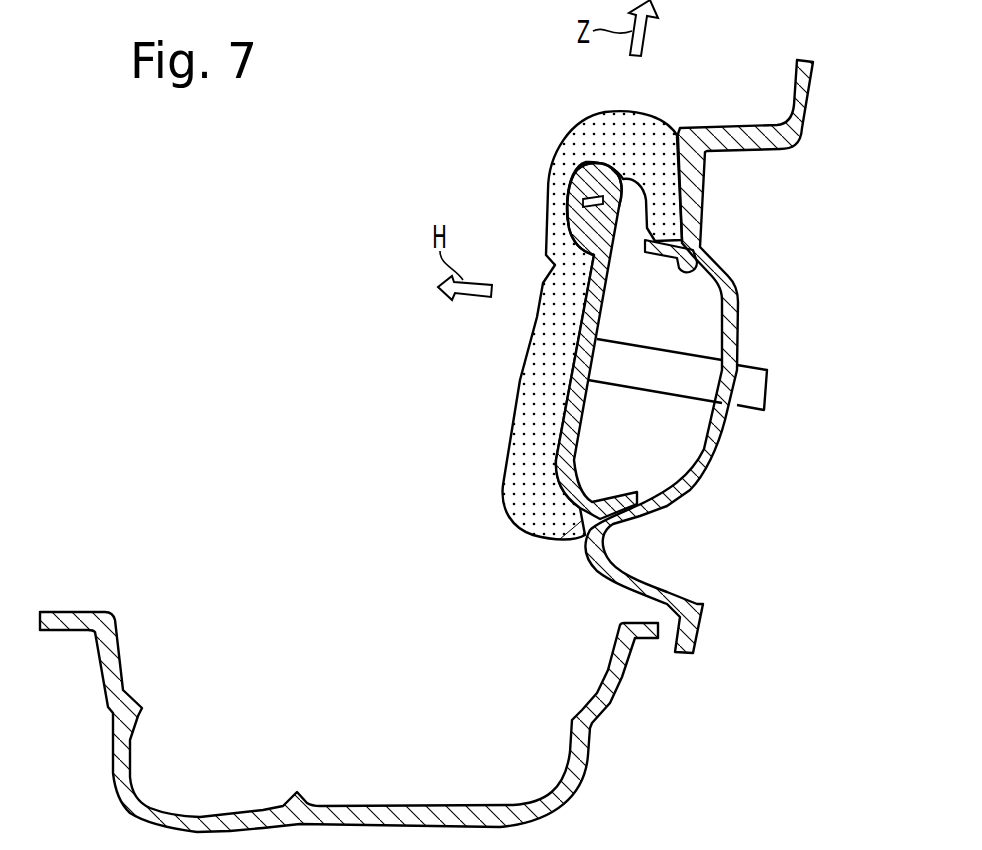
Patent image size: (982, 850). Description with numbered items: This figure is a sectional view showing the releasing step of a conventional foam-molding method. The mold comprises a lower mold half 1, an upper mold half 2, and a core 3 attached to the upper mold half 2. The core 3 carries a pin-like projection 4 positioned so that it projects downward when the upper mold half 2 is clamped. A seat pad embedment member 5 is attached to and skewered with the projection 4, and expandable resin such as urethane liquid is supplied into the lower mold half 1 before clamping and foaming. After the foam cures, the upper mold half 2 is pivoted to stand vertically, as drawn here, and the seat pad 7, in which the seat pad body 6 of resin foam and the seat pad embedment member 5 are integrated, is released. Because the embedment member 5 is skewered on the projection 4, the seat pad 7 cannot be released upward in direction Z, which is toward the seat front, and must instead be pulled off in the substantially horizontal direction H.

The lower mold half 1 is at (357, 803).
The upper mold half 2 is at (740, 307).
The core 3 is at (562, 322).
The pin-like projection 4 is at (568, 219).
The seat pad embedment member 5 is at (581, 181).
The seat pad body 6 is at (527, 410).
The seat pad 7 is at (463, 512).